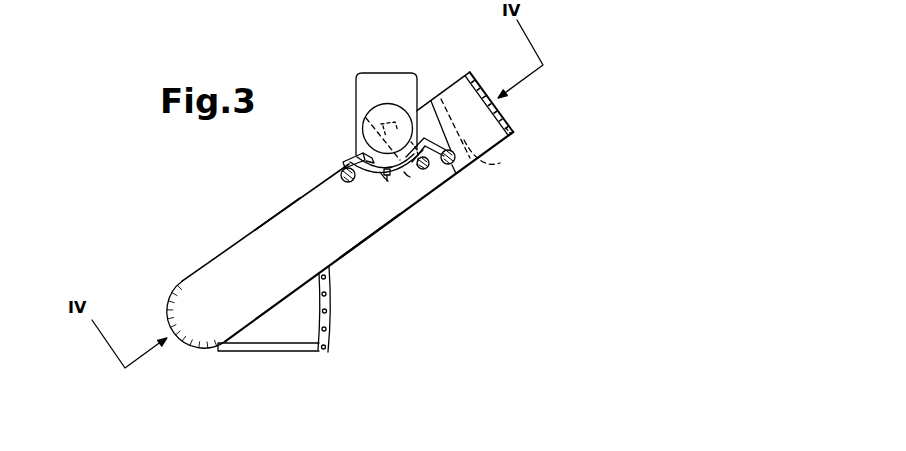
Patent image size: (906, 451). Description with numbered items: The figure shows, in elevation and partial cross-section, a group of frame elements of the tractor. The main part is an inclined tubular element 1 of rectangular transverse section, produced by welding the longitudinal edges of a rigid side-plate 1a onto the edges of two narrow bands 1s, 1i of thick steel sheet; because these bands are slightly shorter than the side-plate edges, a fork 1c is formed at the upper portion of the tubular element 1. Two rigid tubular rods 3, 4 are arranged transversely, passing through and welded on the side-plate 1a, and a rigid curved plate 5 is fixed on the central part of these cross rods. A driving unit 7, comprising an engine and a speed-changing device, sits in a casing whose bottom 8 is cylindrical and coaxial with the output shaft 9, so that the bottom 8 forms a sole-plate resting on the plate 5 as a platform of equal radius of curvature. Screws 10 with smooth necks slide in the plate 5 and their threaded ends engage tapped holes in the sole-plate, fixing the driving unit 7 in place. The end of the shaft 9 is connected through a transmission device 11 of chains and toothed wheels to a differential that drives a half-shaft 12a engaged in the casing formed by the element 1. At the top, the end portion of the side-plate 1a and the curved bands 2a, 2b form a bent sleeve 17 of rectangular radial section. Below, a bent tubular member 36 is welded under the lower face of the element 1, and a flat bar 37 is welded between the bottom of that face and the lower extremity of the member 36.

The tubular element 1 is at (253, 230).
The upper narrow band 1s is at (280, 205).
The side-plate 1a is at (357, 236).
The lower narrow band 1i is at (390, 230).
The fork 1c is at (441, 88).
The bent sleeve 17 is at (512, 110).
The curved band 2a is at (500, 163).
The curved band 2b is at (516, 136).
The driving unit 7 is at (389, 73).
The output shaft 9 is at (366, 118).
The tubular rod 3 is at (339, 171).
The bottom 8 is at (370, 163).
The curved plate 5 is at (383, 176).
The tubular rod 4 is at (453, 165).
The half-shaft 12a is at (421, 172).
The screw 10 is at (388, 181).
The transmission device 11 is at (410, 177).
The bent tubular member 36 is at (331, 304).
The flat bar 37 is at (275, 353).